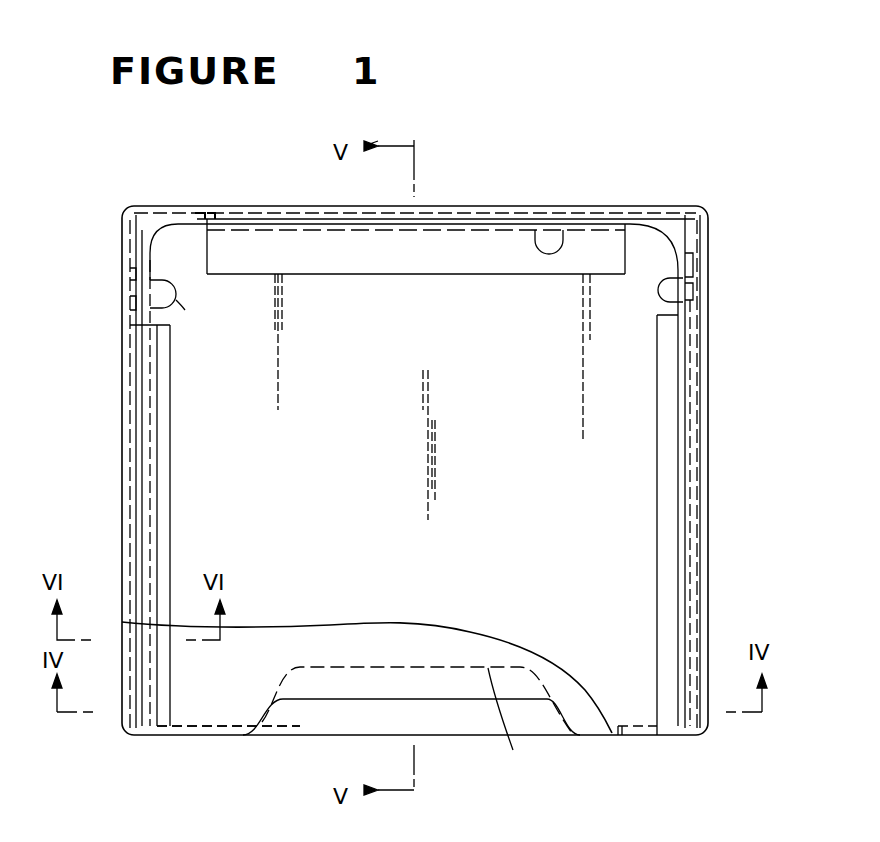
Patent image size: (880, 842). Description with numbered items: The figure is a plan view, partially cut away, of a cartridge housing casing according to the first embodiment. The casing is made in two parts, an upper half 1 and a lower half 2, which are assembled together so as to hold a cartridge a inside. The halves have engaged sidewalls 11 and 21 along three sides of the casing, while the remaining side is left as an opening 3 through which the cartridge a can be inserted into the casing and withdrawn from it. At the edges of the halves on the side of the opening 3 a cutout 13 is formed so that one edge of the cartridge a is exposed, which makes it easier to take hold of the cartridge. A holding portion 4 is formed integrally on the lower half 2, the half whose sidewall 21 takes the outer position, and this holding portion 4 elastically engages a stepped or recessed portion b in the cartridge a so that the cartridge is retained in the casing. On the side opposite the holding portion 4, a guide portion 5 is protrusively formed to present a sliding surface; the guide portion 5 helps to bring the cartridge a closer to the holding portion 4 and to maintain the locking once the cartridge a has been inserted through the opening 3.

The upper half 1 is at (188, 700).
The lower half 2 is at (185, 478).
The opening 3 is at (555, 742).
The holding portion 4 is at (150, 294).
The guide portion 5 is at (668, 288).
The sidewall 11 is at (122, 620).
The cutout 13 is at (307, 700).
The sidewall 21 is at (122, 378).
The cartridge a is at (170, 226).
The recessed portion b is at (189, 313).